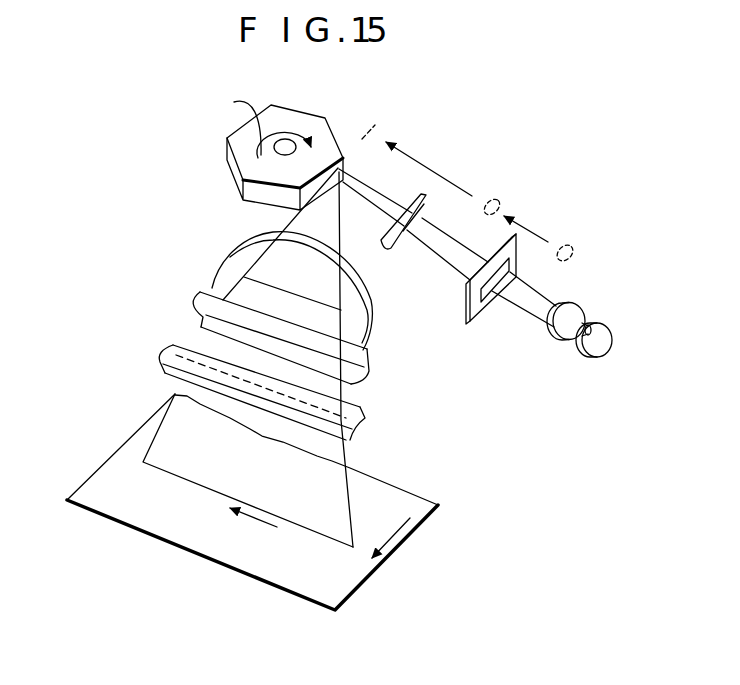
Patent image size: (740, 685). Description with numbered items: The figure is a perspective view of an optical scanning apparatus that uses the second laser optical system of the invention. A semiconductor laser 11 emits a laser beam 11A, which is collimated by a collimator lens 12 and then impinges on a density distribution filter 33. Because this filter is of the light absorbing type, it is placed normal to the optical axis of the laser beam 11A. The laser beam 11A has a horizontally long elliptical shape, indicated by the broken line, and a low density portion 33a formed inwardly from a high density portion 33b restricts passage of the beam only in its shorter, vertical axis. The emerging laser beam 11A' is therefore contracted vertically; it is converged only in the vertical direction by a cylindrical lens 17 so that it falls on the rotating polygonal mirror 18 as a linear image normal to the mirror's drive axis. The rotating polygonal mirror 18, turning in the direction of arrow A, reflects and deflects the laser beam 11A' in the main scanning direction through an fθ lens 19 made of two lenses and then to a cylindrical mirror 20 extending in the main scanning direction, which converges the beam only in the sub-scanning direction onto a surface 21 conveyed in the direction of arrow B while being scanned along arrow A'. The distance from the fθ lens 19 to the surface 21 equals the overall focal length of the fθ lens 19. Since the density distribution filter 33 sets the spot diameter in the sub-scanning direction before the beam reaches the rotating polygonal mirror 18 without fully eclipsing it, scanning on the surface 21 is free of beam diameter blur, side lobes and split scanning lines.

The rotating polygonal mirror 18 is at (329, 135).
The cylindrical lens 17 is at (426, 211).
The laser beam 11A' is at (435, 249).
The density distribution filter 33 is at (491, 310).
The low density portion 33a is at (482, 291).
The high density portion 33b is at (470, 303).
The collimator lens 12 is at (570, 301).
The laser beam 11A is at (615, 312).
The semiconductor laser 11 is at (611, 342).
The fθ lens 19 is at (167, 307).
The cylindrical mirror 20 is at (163, 352).
The surface 21 is at (93, 480).